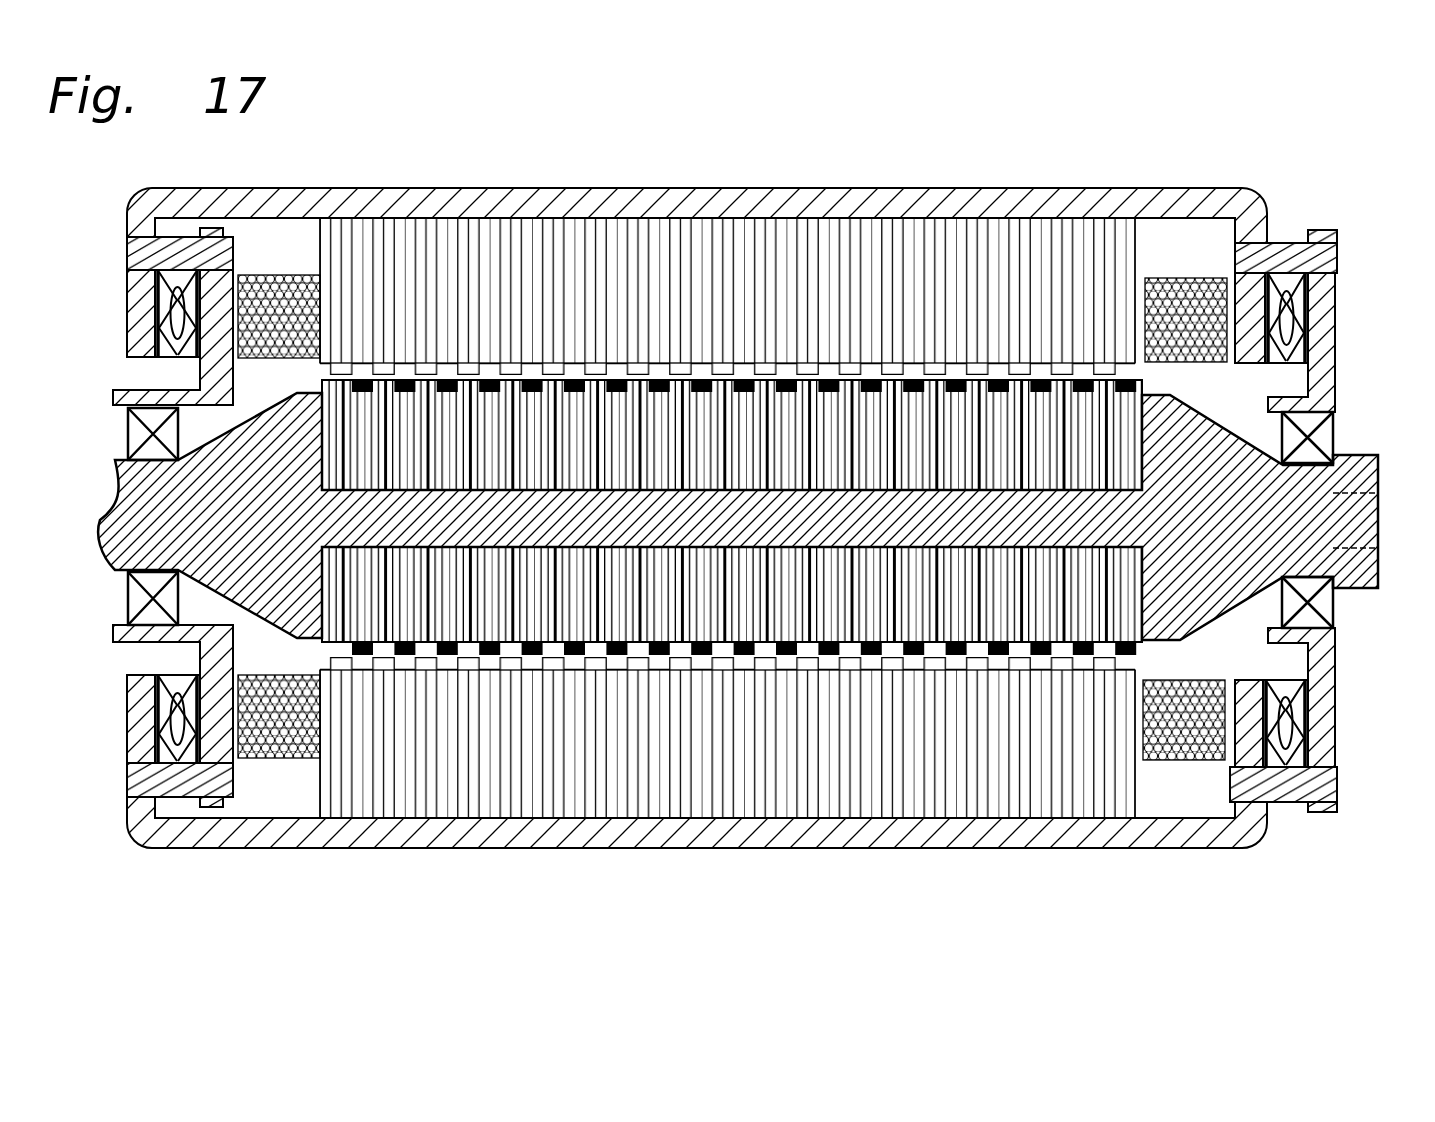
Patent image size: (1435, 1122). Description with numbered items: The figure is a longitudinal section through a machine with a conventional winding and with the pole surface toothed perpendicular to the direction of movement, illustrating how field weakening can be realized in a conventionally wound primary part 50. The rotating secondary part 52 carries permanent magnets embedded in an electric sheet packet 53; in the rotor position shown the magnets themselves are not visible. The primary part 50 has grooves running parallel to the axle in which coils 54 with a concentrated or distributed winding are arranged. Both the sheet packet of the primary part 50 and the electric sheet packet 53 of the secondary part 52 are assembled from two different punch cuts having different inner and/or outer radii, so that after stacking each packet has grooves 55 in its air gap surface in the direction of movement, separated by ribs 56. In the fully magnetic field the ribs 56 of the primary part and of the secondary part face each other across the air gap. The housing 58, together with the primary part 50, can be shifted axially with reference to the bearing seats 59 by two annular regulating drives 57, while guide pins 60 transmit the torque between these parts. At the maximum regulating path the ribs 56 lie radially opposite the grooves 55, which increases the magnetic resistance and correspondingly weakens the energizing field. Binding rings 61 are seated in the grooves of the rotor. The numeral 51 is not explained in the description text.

The primary part 50 is at (572, 212).
The permanent magnet 51 is at (565, 378).
The secondary part 52 is at (732, 745).
The electric sheet packet 53 is at (895, 290).
The coils 54 is at (1170, 300).
The grooves 55 is at (648, 660).
The ribs 56 is at (750, 660).
The annular regulating drives 57 is at (170, 760).
The housing 58 is at (300, 835).
The bearing seats 59 is at (1306, 640).
The guide pins 60 is at (1272, 790).
The binding rings 61 is at (940, 655).